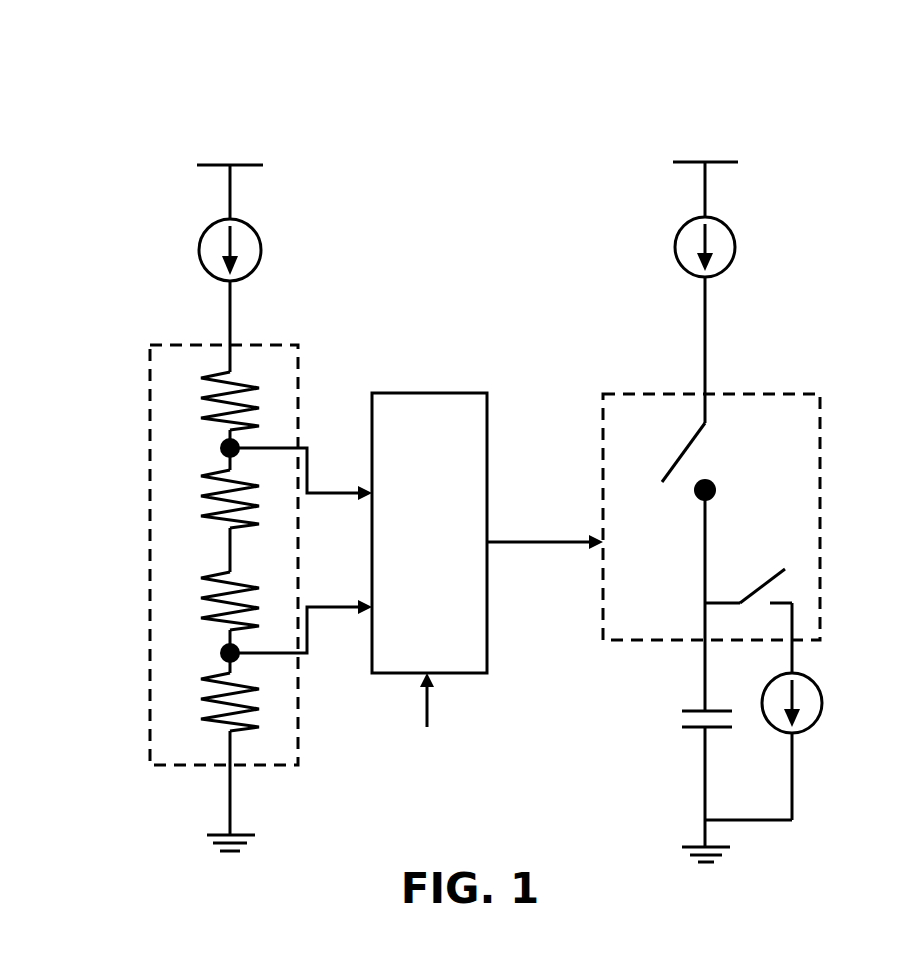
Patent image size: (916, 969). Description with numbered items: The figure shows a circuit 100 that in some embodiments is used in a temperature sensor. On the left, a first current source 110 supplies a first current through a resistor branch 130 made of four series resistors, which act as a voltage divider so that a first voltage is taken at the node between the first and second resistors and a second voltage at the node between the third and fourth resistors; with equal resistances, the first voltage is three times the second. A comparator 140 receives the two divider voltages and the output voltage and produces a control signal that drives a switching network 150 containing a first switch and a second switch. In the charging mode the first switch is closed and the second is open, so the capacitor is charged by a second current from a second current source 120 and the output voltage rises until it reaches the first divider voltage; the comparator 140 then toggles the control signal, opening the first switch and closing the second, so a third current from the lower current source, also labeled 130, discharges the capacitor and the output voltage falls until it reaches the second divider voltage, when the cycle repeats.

The circuit 100 is at (795, 112).
The current source 110 is at (202, 236).
The current source 120 is at (686, 216).
The resistor branch 130 is at (150, 430).
The comparator 140 is at (487, 610).
The switching network 150 is at (788, 394).